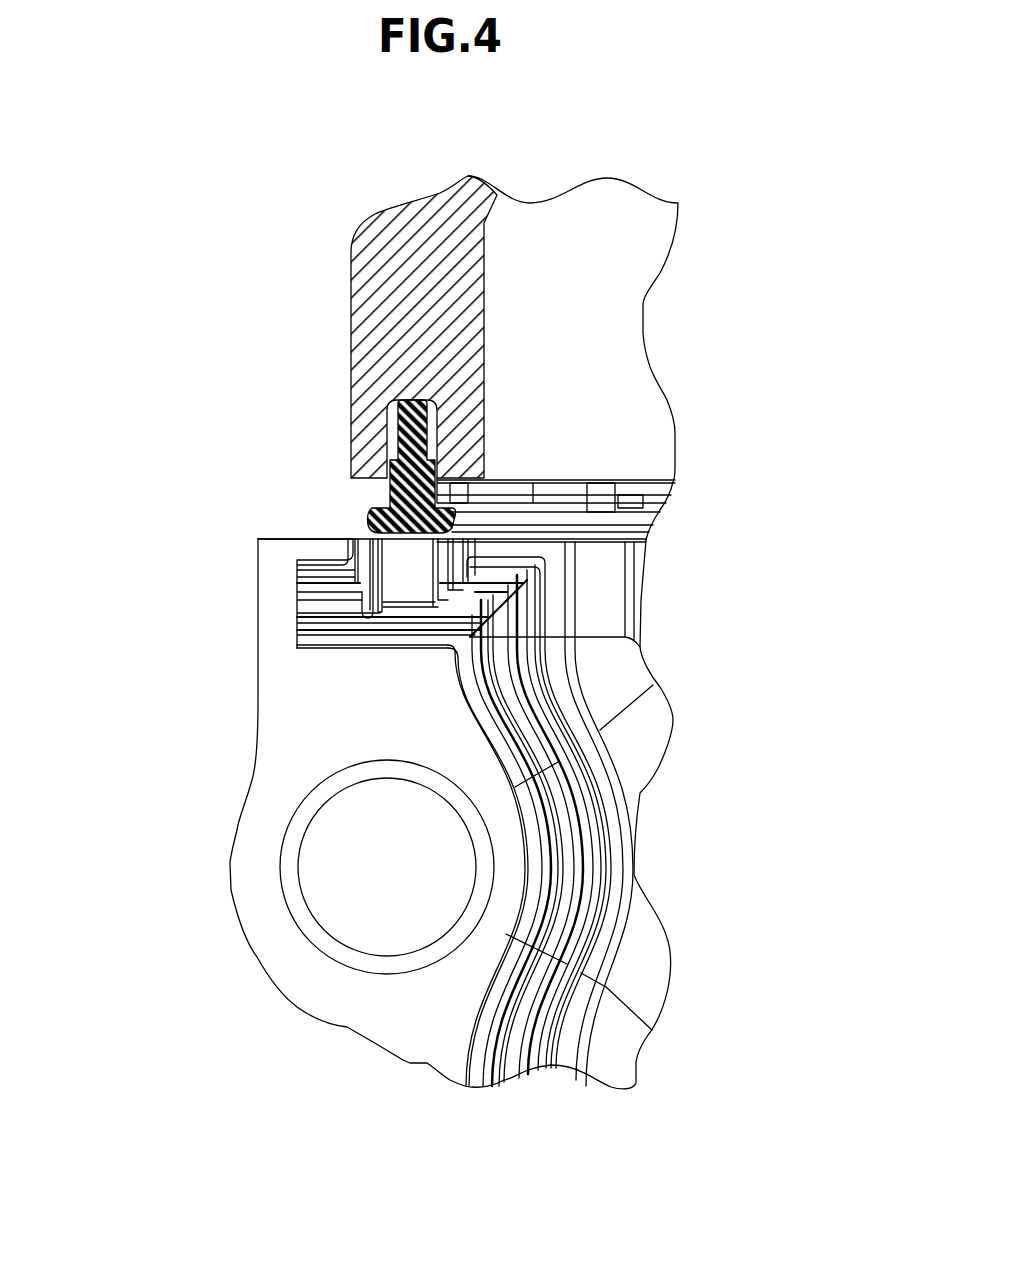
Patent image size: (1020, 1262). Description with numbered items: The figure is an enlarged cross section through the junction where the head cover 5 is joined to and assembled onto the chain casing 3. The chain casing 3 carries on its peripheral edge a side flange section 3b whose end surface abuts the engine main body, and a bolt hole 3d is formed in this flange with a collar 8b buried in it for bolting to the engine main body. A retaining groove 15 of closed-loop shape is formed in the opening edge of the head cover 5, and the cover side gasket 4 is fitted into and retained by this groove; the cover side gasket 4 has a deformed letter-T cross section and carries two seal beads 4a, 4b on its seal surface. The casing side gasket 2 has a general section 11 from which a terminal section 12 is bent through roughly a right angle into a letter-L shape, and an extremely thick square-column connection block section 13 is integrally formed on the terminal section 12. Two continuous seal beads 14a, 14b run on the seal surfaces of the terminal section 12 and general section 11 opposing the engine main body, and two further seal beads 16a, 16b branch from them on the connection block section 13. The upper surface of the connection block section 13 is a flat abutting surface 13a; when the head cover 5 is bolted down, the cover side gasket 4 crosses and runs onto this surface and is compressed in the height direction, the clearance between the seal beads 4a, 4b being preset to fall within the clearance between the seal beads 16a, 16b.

The casing side gasket 2 is at (633, 763).
The chain casing 3 is at (220, 870).
The side flange section 3b is at (292, 752).
The bolt hole 3d is at (300, 910).
The cover side gasket 4 is at (446, 433).
The seal bead 4a is at (350, 558).
The seal bead 4b is at (450, 546).
The head cover 5 is at (336, 293).
The collar 8b is at (355, 960).
The general section 11 is at (623, 950).
The terminal section 12 is at (317, 652).
The connection block section 13 is at (350, 543).
The flat abutting surface 13a is at (470, 500).
The seal bead 14a is at (589, 855).
The seal bead 14b is at (537, 837).
The retaining groove 15 is at (385, 433).
The seal bead 16a is at (400, 540).
The seal bead 16b is at (440, 577).